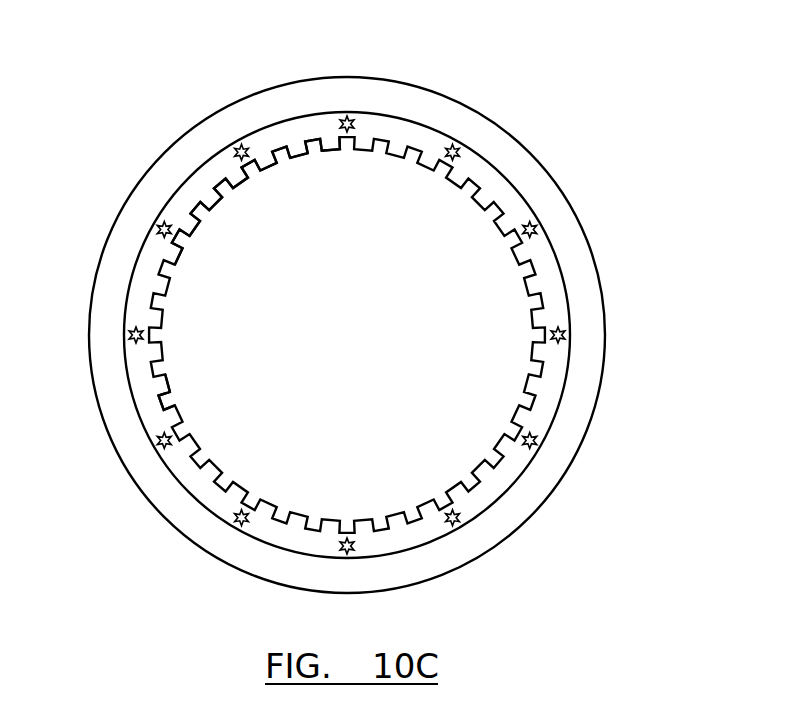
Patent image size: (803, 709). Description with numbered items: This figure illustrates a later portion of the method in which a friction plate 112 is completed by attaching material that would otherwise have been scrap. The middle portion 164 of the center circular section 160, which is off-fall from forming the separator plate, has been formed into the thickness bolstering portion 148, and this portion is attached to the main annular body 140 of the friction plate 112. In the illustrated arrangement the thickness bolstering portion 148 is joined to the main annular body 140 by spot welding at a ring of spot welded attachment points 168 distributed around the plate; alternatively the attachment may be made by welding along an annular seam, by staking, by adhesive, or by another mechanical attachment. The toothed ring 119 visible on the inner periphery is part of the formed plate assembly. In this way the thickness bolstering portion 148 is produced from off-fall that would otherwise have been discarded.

The friction plate 112 is at (586, 129).
The main annular body 140 is at (553, 212).
The thickness bolstering portion 148 is at (333, 131).
The teeth 119 is at (262, 171).
The center circular section 160 is at (174, 361).
The middle portion 164 is at (187, 473).
The spot welded attachment points 168 is at (346, 116).